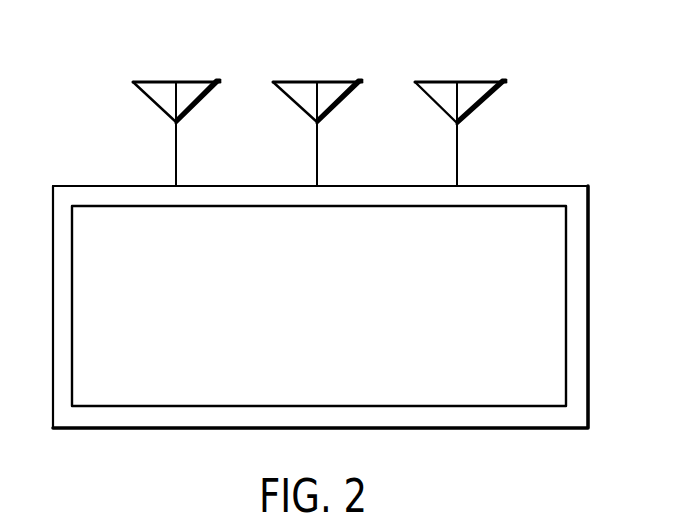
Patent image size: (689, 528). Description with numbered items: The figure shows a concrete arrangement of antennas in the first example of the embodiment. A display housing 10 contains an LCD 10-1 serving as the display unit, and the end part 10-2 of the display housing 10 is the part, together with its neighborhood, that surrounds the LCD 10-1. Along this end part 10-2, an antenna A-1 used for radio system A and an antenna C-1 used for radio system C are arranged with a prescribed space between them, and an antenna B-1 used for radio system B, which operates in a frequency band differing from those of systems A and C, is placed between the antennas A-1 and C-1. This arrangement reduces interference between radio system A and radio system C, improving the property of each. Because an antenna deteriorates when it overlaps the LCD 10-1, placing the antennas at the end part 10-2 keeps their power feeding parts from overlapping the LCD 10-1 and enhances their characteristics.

The display housing 10 is at (535, 184).
The LCD 10-1 is at (403, 266).
The end part 10-2 is at (375, 196).
The antenna A-1 is at (168, 82).
The antenna B-1 is at (308, 82).
The antenna C-1 is at (450, 82).